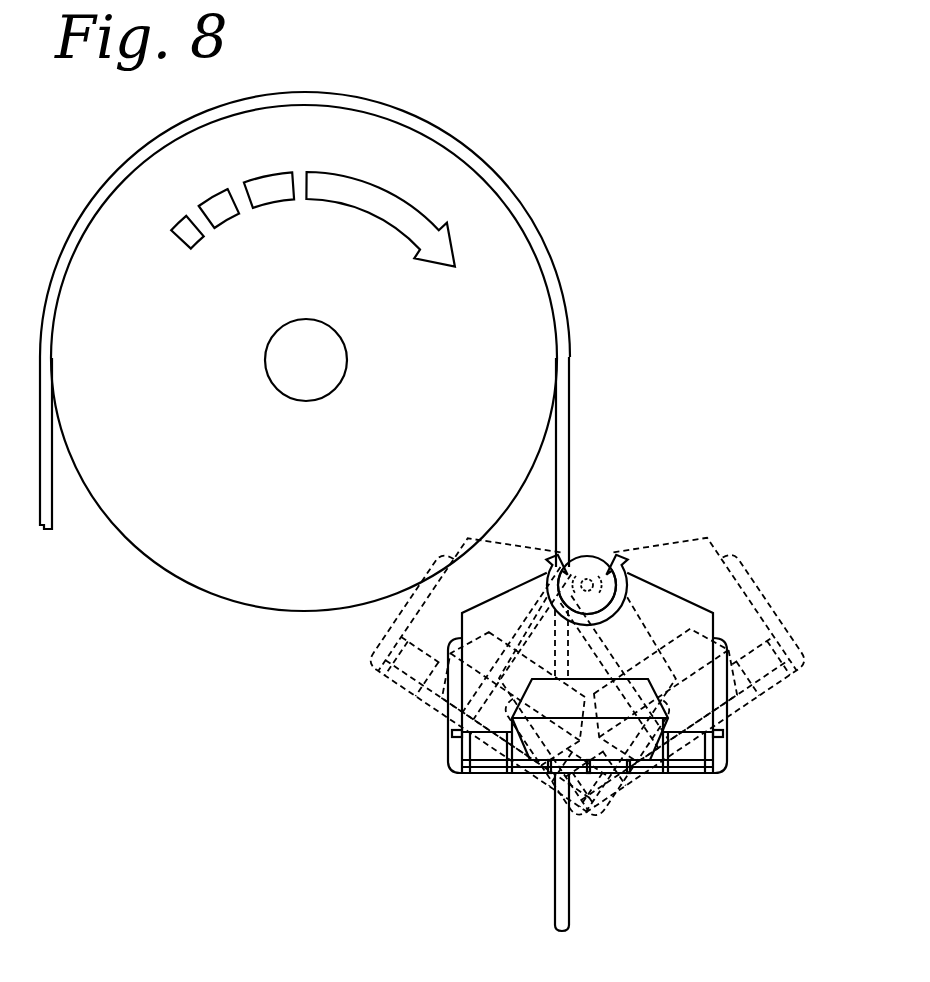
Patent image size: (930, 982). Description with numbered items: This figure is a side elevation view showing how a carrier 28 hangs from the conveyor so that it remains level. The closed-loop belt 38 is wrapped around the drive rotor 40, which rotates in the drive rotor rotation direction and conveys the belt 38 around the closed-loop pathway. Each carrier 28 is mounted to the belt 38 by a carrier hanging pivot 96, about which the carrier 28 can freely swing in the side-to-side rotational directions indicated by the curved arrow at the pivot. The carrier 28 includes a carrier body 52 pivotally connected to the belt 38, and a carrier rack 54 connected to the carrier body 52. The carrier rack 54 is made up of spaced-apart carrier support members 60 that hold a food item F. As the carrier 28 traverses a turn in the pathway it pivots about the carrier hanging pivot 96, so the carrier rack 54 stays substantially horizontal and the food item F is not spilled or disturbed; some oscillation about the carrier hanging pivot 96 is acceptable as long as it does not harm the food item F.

The carrier 28 is at (350, 701).
The belt 38 is at (563, 293).
The drive rotor 40 is at (433, 188).
The carrier body 52 is at (658, 605).
The carrier rack 54 is at (707, 775).
The carrier support members 60 is at (510, 775).
The carrier hanging pivot 96 is at (592, 577).
The food item F is at (552, 706).